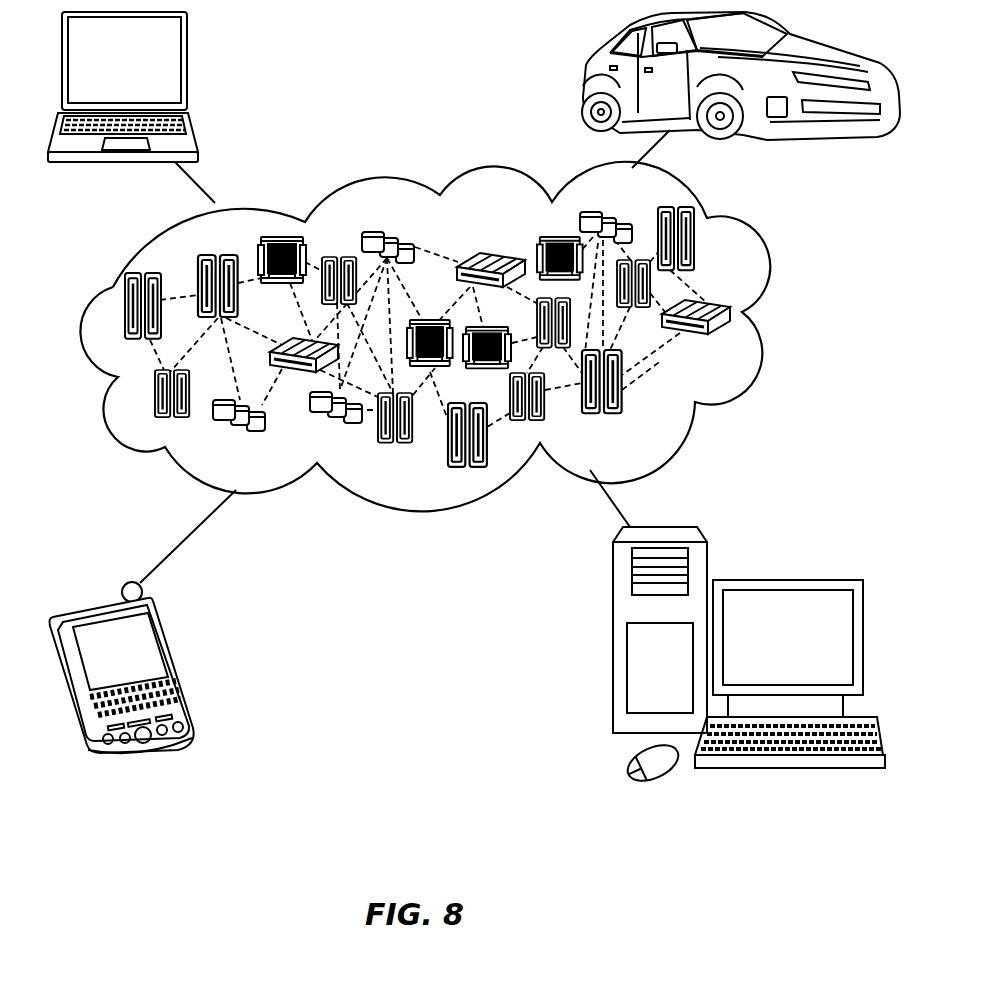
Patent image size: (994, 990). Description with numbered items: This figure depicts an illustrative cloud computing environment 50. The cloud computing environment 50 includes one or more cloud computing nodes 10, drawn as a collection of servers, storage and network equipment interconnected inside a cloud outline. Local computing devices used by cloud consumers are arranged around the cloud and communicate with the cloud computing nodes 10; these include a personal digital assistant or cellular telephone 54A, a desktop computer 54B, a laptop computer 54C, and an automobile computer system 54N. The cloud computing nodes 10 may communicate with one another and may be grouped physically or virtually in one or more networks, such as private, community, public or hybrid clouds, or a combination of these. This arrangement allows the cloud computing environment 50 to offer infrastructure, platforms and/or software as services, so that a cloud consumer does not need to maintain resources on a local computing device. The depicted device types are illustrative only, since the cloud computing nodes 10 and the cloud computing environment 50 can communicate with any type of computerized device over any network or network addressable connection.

The cloud computing node 10 is at (747, 349).
The cloud computing environment 50 is at (785, 318).
The personal digital assistant or cellular telephone 54A is at (177, 663).
The desktop computer 54B is at (785, 578).
The laptop computer 54C is at (188, 66).
The automobile computer system 54N is at (586, 80).